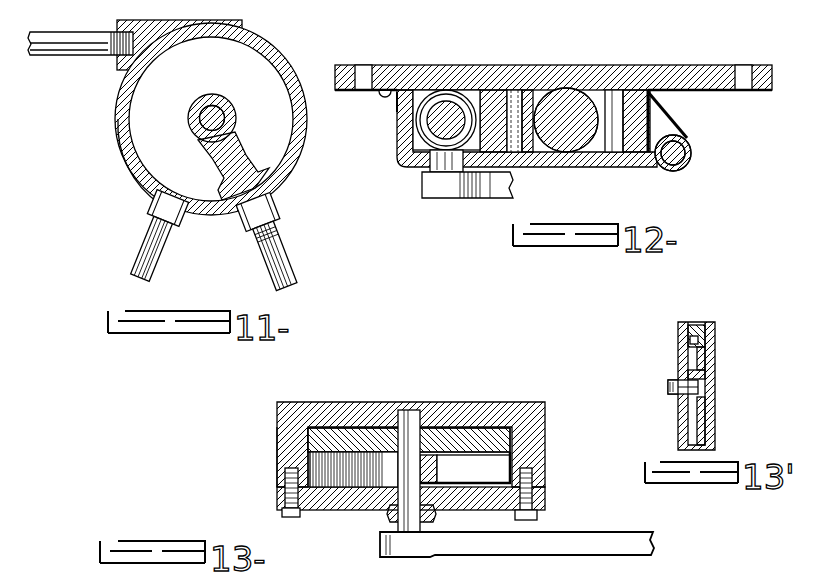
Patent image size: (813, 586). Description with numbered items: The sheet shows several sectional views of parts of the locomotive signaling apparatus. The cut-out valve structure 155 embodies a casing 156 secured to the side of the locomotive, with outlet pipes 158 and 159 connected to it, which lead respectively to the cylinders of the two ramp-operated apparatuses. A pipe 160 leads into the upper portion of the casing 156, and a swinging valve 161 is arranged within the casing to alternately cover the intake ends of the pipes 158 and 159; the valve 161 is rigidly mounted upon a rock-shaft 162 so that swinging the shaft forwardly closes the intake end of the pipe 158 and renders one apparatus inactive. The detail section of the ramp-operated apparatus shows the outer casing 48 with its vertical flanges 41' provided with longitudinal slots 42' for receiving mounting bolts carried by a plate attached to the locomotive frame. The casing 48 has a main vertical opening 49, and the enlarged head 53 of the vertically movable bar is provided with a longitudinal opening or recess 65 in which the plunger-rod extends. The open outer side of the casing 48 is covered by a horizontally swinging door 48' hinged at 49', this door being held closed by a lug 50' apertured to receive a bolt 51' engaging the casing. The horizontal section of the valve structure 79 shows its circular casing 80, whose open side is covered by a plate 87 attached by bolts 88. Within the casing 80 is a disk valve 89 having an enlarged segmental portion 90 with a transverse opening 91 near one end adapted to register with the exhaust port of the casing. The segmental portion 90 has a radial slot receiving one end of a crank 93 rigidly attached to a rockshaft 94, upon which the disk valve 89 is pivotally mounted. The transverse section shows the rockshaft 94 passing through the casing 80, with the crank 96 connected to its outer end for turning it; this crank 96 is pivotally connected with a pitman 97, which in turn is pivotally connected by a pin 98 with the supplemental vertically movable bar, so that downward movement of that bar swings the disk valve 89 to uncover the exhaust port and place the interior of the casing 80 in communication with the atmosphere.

In FIG. 11, the cut-out valve structure 155 is at (258, 31).
In FIG. 11, the casing 156 is at (133, 175).
In FIG. 11, the pipe 160 is at (64, 56).
In FIG. 11, the swinging valve 161 is at (247, 152).
In FIG. 11, the rock-shaft 162 is at (215, 119).
In FIG. 11, the outlet pipe 159 is at (147, 253).
In FIG. 11, the outlet pipe 158 is at (284, 248).
In FIG. 12, the outer casing 48 is at (553, 63).
In FIG. 12, the longitudinal slot 42' is at (559, 61).
In FIG. 12, the vertical flange 41' is at (553, 59).
In FIG. 12, the horizontally swinging door 48' is at (527, 142).
In FIG. 12, the longitudinal opening or recess 65 is at (600, 97).
In FIG. 12, the pin 98 is at (450, 156).
In FIG. 12, the pitman 97 is at (500, 199).
In FIG. 12, the lug 50' is at (362, 102).
In FIG. 12, the bolt 51' is at (384, 146).
In FIG. 12, the main vertical opening 49 is at (680, 115).
In FIG. 12, the hinge 49' is at (692, 162).
In FIG. 12, the enlarged head 53 is at (613, 138).
In FIG. 13, the valve structure 79 is at (549, 442).
In FIG. 13', the valve structure 79 is at (717, 343).
In FIG. 13, the plate 87 is at (347, 503).
In FIG. 13, the circular casing 80 is at (292, 456).
In FIG. 13', the circular casing 80 is at (710, 324).
In FIG. 13, the disk valve 89 is at (320, 445).
In FIG. 13', the disk valve 89 is at (710, 418).
In FIG. 13, the crank 93 is at (488, 468).
In FIG. 13', the crank 93 is at (712, 377).
In FIG. 13, the rockshaft 94 is at (427, 411).
In FIG. 13', the rockshaft 94 is at (698, 387).
In FIG. 13, the bolts 88 is at (282, 513).
In FIG. 13, the enlarged segmental portion 90 is at (528, 488).
In FIG. 13, the crank 96 is at (537, 546).
In FIG. 13', the crank 96 is at (670, 380).
In FIG. 13', the transverse opening 91 is at (680, 338).